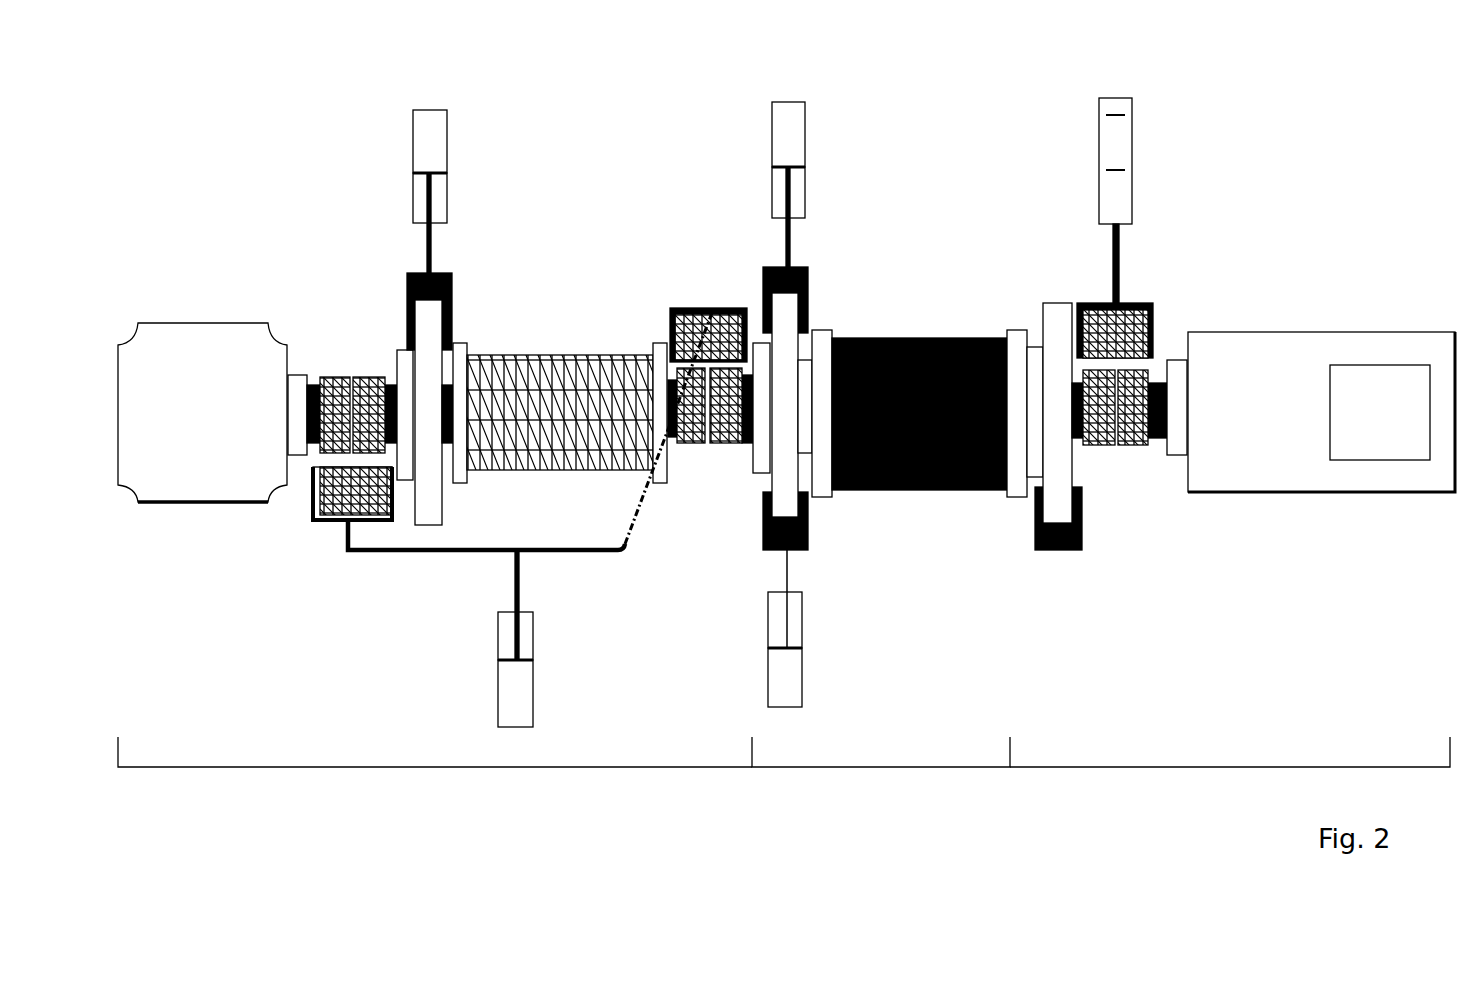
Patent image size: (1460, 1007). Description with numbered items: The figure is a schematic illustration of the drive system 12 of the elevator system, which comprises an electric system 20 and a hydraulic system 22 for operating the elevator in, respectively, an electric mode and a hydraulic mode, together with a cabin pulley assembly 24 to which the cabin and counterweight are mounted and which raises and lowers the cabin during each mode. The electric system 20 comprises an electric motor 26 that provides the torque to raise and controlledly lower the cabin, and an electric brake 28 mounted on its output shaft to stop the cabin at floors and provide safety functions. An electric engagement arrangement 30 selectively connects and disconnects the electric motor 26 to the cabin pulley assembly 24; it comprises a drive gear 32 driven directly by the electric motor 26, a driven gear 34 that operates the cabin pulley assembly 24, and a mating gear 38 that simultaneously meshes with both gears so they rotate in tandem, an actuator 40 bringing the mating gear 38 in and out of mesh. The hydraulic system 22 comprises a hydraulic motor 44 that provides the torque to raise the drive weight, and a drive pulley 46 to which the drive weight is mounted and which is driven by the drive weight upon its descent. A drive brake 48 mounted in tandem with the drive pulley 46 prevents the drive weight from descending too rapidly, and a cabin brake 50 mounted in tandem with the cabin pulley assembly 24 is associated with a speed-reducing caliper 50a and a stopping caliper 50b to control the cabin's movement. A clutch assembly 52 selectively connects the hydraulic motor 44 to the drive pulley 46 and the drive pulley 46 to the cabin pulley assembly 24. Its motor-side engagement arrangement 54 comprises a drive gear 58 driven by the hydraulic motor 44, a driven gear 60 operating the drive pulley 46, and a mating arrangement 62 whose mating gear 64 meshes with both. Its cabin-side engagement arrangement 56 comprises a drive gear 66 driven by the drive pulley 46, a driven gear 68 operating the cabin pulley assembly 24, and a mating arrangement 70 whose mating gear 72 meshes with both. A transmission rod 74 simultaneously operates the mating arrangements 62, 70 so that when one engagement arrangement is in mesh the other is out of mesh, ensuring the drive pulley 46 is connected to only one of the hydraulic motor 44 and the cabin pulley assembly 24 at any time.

The drive system 12 is at (200, 88).
The electric system 20 is at (1145, 767).
The hydraulic system 22 is at (437, 767).
The cabin pulley assembly 24 is at (872, 767).
The electric motor 26 is at (1228, 332).
The electric brake 28 is at (1058, 552).
The electric engagement arrangement 30 is at (1121, 185).
The drive gear 32 is at (1133, 445).
The driven gear 34 is at (1093, 445).
The mating gear 38 is at (1123, 328).
The actuator 40 is at (1132, 152).
The hydraulic motor 44 is at (190, 323).
The drive pulley 46 is at (508, 355).
The drive brake 48 is at (435, 102).
The cabin brake 50 is at (828, 395).
The speed-reducing caliper 50a is at (808, 120).
The stopping caliper 50b is at (805, 667).
The clutch assembly 52 is at (425, 658).
The motor-side engagement arrangement 54 is at (349, 359).
The cabin-side engagement arrangement 56 is at (668, 367).
The drive gear 58 is at (333, 380).
The driven gear 60 is at (358, 377).
The mating arrangement 62 is at (473, 519).
The mating gear 64 is at (310, 503).
The drive gear 66 is at (728, 443).
The driven gear 68 is at (697, 443).
The mating arrangement 70 is at (665, 305).
The mating gear 72 is at (724, 330).
The transmission rod 74 is at (585, 553).